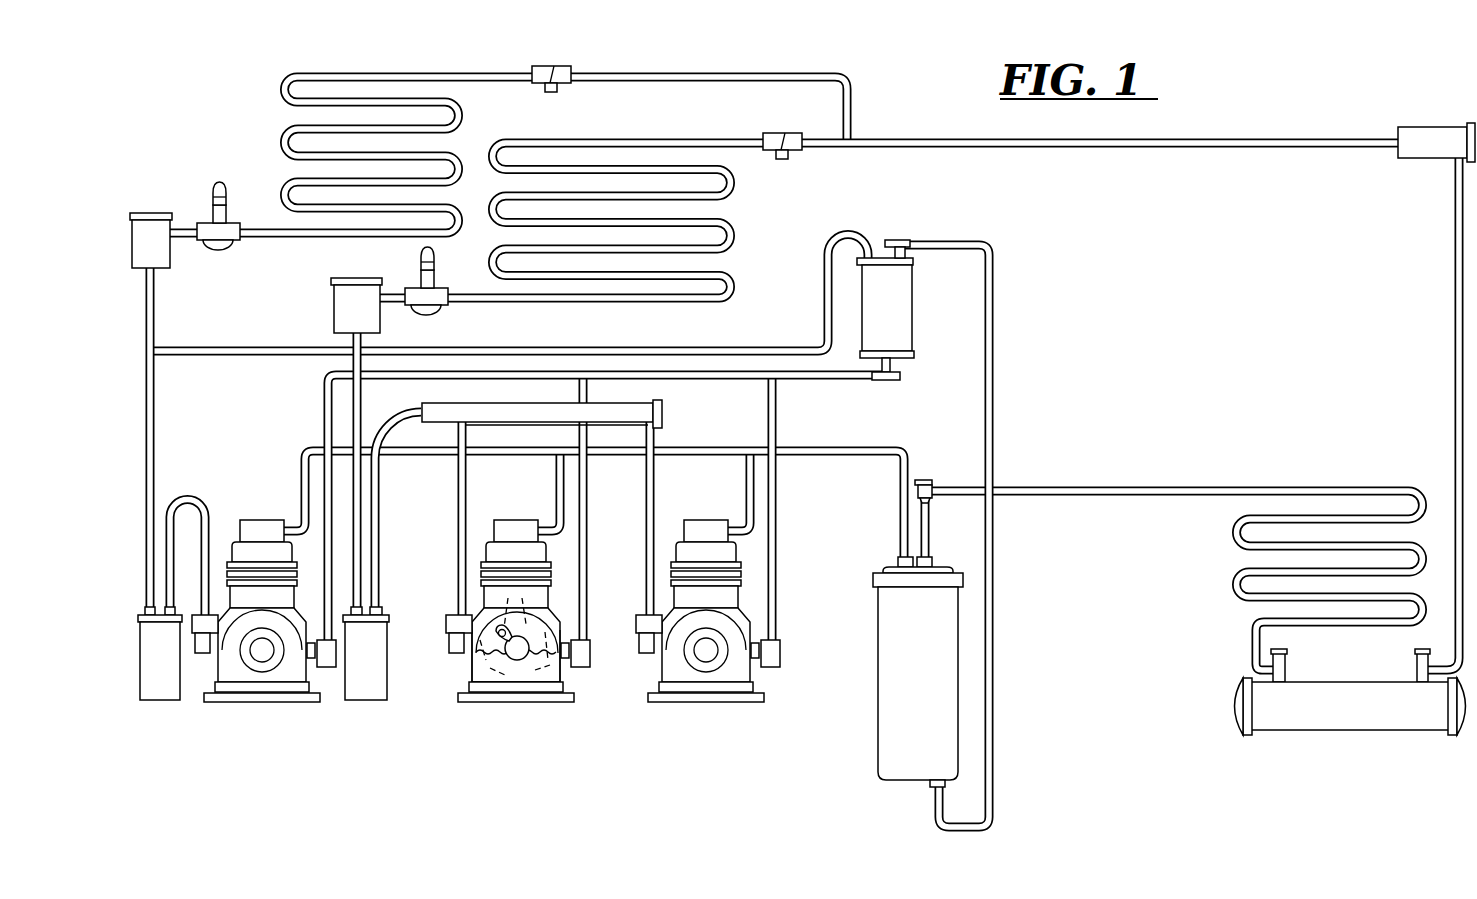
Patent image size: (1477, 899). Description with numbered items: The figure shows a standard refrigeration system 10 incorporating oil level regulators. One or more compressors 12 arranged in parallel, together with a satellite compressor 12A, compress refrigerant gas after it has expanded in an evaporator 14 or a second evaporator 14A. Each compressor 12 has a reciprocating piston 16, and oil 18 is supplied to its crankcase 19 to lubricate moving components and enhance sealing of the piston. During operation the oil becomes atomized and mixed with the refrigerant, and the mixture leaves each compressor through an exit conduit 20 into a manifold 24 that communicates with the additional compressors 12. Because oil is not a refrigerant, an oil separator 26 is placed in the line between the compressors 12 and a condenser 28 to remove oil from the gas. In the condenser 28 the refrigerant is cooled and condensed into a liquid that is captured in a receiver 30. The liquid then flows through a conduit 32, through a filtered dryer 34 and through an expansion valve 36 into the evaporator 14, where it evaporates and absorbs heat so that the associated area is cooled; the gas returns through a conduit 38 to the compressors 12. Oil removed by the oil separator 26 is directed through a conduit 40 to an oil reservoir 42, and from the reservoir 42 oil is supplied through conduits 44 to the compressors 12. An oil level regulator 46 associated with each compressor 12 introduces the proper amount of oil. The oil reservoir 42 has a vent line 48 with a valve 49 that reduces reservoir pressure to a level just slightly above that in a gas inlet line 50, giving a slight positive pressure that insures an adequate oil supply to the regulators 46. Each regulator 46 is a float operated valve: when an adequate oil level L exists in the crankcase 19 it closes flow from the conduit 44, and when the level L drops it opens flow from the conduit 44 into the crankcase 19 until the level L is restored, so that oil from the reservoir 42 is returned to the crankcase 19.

The refrigeration system 10 is at (1232, 128).
The compressor 12 is at (587, 604).
The satellite compressor 12A is at (263, 530).
The evaporator 14 is at (737, 223).
The evaporator 14A is at (281, 130).
The reciprocating piston 16 is at (563, 632).
The oil 18 is at (483, 665).
The crankcase 19 is at (550, 610).
The exit conduit 20 is at (303, 468).
The manifold 24 is at (735, 447).
The oil separator 26 is at (875, 573).
The condenser 28 is at (1232, 586).
The receiver 30 is at (1234, 703).
The conduit 32 is at (1455, 505).
The filtered dryer 34 is at (1431, 140).
The expansion valve 36 is at (803, 152).
The conduit 38 is at (326, 369).
The conduit 40 is at (992, 533).
The oil reservoir 42 is at (912, 323).
The conduit 44 is at (808, 350).
The oil level regulator 46 is at (330, 668).
The vent line 48 is at (830, 292).
The valve 49 is at (874, 252).
The gas inlet line 50 is at (153, 374).
The oil level L is at (537, 657).